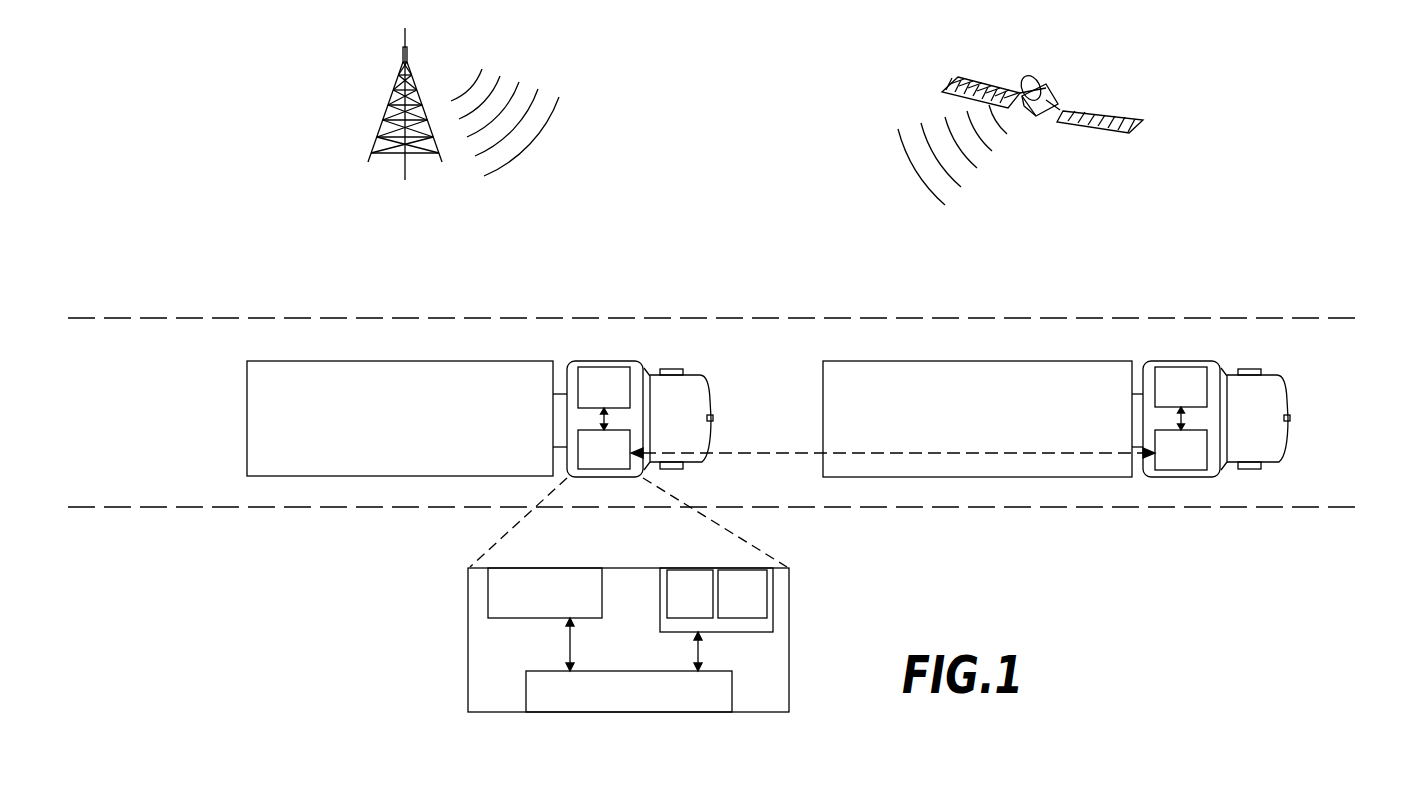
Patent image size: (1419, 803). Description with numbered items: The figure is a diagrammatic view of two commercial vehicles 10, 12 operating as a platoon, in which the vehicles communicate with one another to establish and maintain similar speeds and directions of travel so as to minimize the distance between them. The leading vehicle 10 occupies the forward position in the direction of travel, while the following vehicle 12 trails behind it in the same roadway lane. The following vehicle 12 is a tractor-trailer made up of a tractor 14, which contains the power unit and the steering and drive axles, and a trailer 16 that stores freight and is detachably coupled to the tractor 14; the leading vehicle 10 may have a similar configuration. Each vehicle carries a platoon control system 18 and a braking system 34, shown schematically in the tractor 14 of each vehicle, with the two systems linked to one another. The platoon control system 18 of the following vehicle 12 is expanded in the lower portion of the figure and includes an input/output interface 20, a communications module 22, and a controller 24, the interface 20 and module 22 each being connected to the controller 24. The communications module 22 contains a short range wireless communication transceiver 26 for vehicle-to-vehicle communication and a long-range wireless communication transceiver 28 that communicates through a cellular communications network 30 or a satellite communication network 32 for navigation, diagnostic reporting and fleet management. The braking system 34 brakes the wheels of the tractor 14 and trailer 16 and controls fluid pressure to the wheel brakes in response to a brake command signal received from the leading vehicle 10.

The leading vehicle 10 is at (873, 380).
The following vehicle 12 is at (310, 377).
The tractor 14 is at (686, 399).
The trailer 16 is at (493, 397).
The platoon control system 18 is at (892, 450).
The input/output interface 20 is at (545, 619).
The communications module 22 is at (767, 626).
The controller 24 is at (629, 691).
The short range wireless communication transceiver 26 is at (690, 594).
The long-range wireless communication transceiver 28 is at (742, 594).
The cellular communications network 30 is at (387, 118).
The satellite communication network 32 is at (1050, 96).
The braking system 34 is at (892, 398).